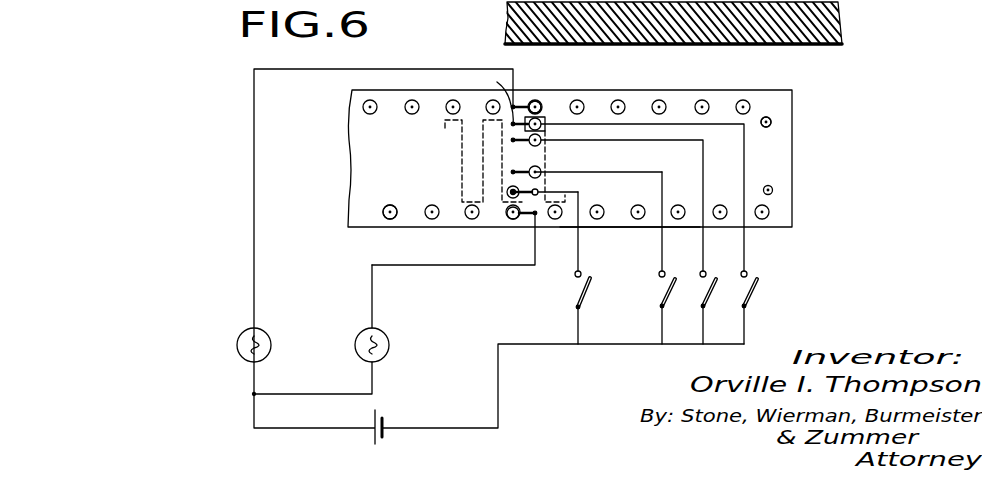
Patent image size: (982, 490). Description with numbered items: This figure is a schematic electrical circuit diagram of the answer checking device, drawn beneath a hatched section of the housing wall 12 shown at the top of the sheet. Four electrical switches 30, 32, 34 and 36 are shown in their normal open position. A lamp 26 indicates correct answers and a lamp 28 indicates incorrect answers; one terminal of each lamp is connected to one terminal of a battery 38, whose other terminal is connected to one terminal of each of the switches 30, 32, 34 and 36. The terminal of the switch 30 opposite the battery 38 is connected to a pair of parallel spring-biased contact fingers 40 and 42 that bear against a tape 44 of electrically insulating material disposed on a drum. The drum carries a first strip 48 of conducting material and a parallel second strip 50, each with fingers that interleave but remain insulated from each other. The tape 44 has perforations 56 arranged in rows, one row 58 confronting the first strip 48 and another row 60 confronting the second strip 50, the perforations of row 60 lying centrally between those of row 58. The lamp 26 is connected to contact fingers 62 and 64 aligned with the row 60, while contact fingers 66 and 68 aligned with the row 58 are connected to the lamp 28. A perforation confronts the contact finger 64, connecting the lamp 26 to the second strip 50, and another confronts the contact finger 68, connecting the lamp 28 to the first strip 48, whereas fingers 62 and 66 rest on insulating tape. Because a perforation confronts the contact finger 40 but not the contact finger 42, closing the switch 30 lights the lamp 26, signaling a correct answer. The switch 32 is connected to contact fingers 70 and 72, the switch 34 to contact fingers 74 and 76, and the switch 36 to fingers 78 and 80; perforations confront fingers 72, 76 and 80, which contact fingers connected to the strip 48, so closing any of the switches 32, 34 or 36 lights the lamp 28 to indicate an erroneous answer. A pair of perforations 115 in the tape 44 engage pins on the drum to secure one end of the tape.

The panel 12 is at (842, 22).
The lamp 26 is at (270, 326).
The lamp 28 is at (386, 332).
The switch 30 is at (575, 285).
The switch 32 is at (660, 284).
The switch 34 is at (708, 284).
The switch 36 is at (750, 284).
The battery 38 is at (386, 417).
The contact finger 40 is at (513, 192).
The contact finger 42 is at (542, 191).
The tape 44 is at (782, 121).
The strip 48 is at (624, 226).
The second strip 50 is at (682, 103).
The perforations 56 is at (386, 221).
The row of perforations 58 is at (786, 214).
The row of perforations 60 is at (776, 104).
The contact finger 62 is at (514, 105).
The contact finger 64 is at (541, 103).
The contact finger 66 is at (546, 222).
The contact finger 68 is at (508, 221).
The contact finger 70 is at (513, 172).
The contact finger 72 is at (542, 171).
The contact finger 74 is at (513, 140).
The contact finger 76 is at (545, 148).
The finger 78 is at (497, 82).
The finger 80 is at (538, 122).
The perforations 115 is at (775, 188).